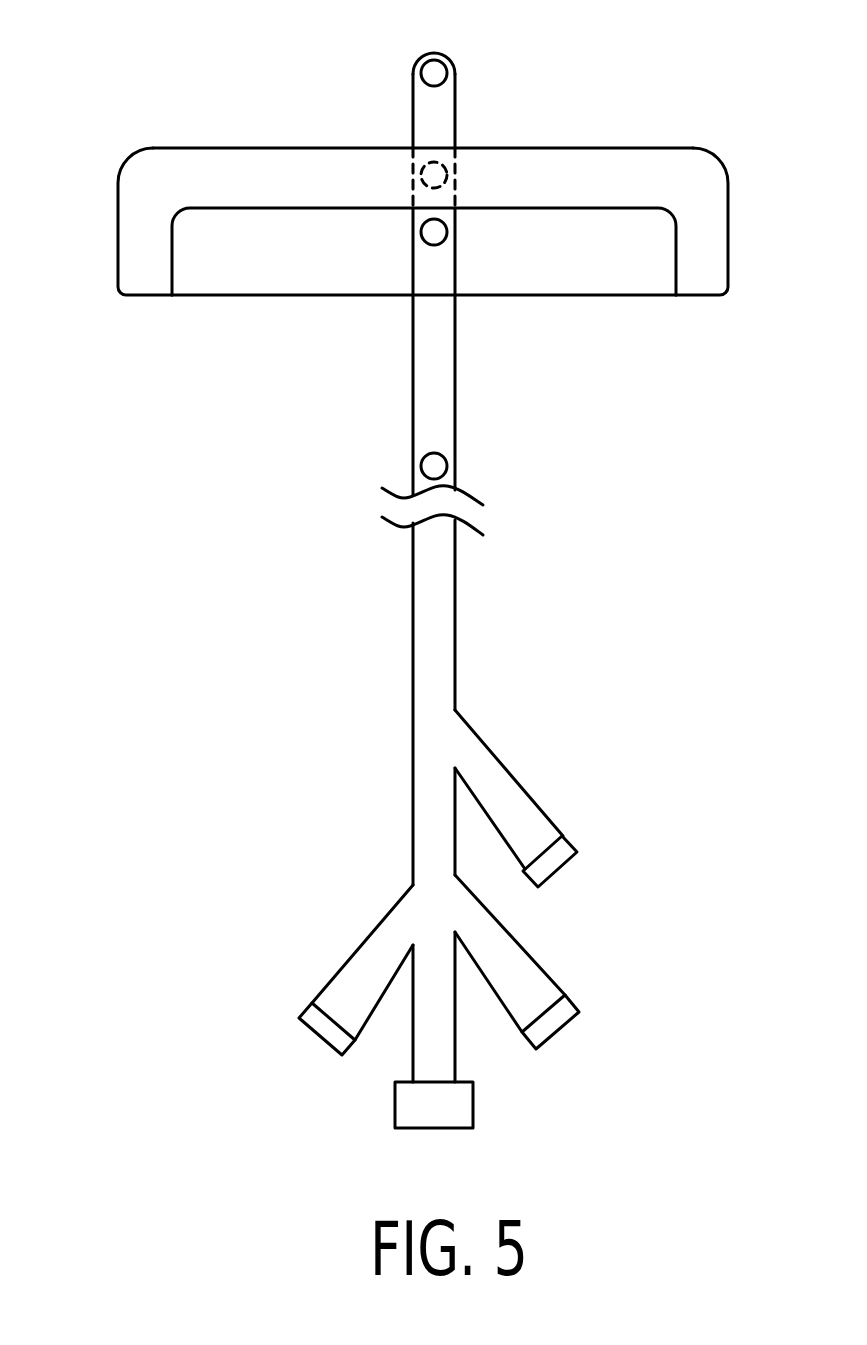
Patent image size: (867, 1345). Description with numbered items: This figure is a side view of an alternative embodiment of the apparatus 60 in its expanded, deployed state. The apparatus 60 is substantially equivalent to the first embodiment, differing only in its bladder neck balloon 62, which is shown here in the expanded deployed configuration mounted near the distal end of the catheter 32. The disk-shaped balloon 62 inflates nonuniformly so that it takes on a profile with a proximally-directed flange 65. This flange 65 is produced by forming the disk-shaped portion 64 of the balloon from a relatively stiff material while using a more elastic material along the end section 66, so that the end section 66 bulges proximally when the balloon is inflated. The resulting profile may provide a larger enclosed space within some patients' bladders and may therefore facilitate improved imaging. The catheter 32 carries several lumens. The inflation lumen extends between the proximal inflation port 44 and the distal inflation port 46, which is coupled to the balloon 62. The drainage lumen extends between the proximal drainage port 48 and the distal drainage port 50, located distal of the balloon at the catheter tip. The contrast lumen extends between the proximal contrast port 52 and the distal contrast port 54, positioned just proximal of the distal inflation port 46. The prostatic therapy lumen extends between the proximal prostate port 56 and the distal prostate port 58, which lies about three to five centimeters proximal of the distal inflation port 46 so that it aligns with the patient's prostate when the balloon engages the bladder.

The catheter 32 is at (423, 367).
The proximal inflation port 44 is at (552, 862).
The distal inflation port 46 is at (422, 172).
The proximal drainage port 48 is at (462, 1105).
The distal drainage port 50 is at (434, 70).
The proximal contrast port 52 is at (325, 1032).
The distal contrast port 54 is at (447, 232).
The proximal prostate port 56 is at (548, 1028).
The distal prostate port 58 is at (447, 466).
The apparatus 60 is at (608, 498).
The bladder neck balloon 62 is at (656, 160).
The disk-shaped portion 64 is at (294, 148).
The proximally-directed flange 65 is at (184, 215).
The end section 66 is at (130, 222).